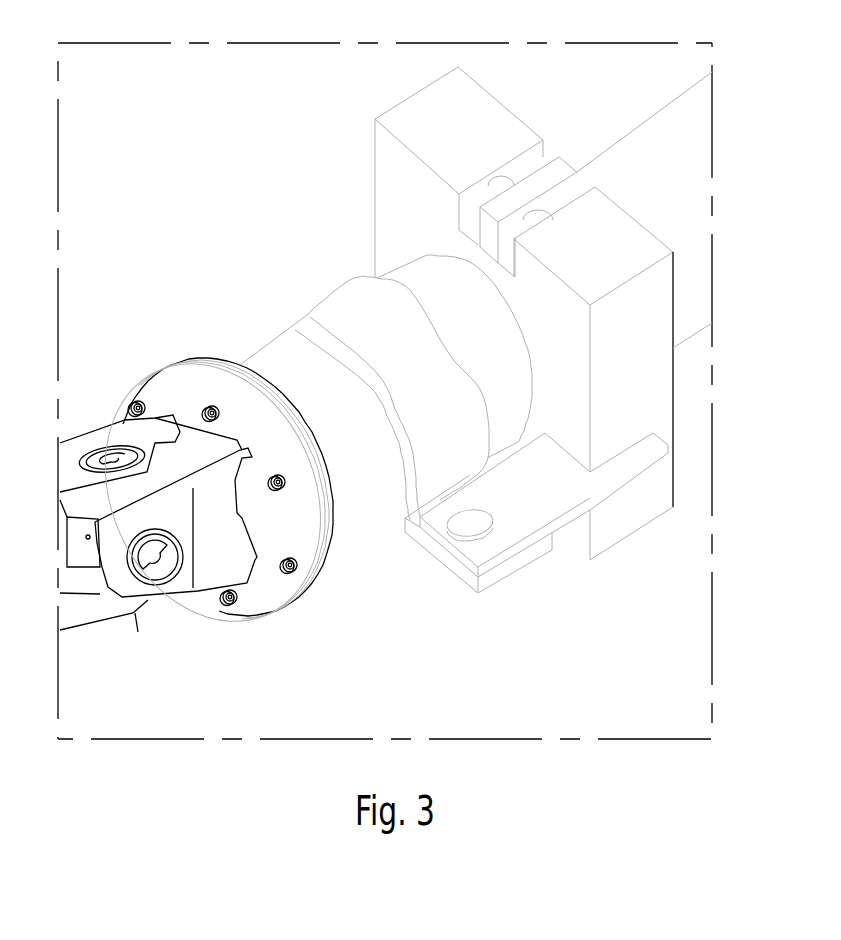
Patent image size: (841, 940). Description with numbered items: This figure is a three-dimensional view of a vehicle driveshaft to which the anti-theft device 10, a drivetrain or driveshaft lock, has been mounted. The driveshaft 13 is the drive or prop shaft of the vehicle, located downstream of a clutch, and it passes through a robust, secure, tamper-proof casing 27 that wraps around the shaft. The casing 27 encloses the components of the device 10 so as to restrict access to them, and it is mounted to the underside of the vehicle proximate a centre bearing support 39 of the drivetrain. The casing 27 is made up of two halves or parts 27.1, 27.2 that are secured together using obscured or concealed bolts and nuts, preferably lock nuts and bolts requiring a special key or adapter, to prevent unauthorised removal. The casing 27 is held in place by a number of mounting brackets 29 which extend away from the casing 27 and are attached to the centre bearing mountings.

The anti-theft device 10 is at (311, 658).
The driveshaft 13 is at (275, 358).
The centre bearing support 39 is at (418, 327).
The casing 27 is at (615, 522).
The casing part 27.1 is at (601, 212).
The casing part 27.2 is at (503, 130).
The mounting bracket 29 is at (568, 470).